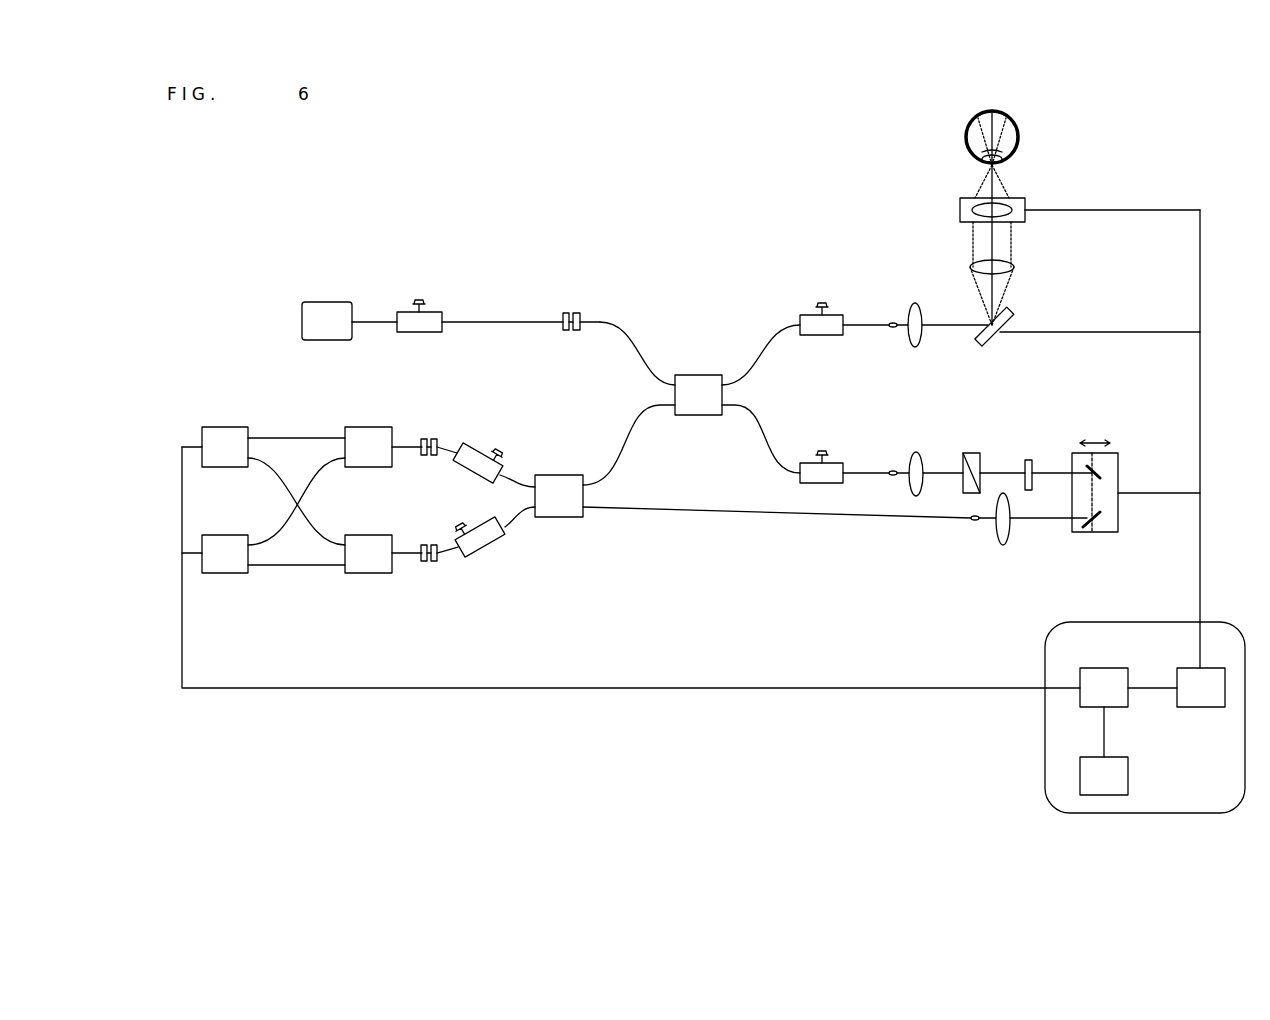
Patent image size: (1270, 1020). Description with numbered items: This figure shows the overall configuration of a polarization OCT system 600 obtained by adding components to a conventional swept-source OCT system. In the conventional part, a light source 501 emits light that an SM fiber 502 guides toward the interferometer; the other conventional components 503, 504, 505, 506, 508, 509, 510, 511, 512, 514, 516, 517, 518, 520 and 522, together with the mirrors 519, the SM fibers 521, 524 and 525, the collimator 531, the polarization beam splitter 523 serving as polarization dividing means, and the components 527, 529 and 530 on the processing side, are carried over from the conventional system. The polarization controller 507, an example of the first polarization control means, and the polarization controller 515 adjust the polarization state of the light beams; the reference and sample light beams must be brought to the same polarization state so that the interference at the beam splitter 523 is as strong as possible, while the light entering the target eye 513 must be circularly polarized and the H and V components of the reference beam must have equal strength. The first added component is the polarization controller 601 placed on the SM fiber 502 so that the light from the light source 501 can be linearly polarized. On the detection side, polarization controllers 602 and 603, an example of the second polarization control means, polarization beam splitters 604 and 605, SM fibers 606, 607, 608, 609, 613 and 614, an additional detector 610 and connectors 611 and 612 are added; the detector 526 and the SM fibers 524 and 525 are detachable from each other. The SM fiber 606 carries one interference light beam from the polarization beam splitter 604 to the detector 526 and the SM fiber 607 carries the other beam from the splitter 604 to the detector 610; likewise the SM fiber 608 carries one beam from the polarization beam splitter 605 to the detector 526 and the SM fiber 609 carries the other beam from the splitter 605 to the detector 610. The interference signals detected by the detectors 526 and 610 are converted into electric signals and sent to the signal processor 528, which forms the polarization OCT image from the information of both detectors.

The OCT apparatus 600 is at (286, 194).
The light source 501 is at (334, 302).
The SM fiber 502 is at (377, 320).
The polarization controller 601 is at (432, 312).
The conventional SS-OCT component 503 is at (572, 312).
The conventional SS-OCT component 504 is at (640, 345).
The conventional SS-OCT component 505 is at (698, 375).
The conventional SS-OCT component 506 is at (768, 336).
The polarization controller 507 is at (805, 315).
The conventional SS-OCT component 508 is at (912, 303).
The conventional SS-OCT component 509 is at (1008, 316).
The conventional SS-OCT component 510 is at (1014, 266).
The conventional SS-OCT component 511 is at (962, 208).
The conventional SS-OCT component 512 is at (1022, 198).
The target eye 513 is at (1016, 128).
The conventional SS-OCT component 514 is at (756, 444).
The polarization controller 515 is at (820, 463).
The conventional SS-OCT component 516 is at (918, 452).
The conventional SS-OCT component 517 is at (970, 453).
The conventional SS-OCT component 518 is at (1028, 460).
The mirror 519 is at (1086, 462).
The conventional SS-OCT component 520 is at (1118, 466).
The SM fiber 521 is at (800, 514).
The optical fiber 522 is at (636, 440).
The polarization beam splitter 523 is at (560, 517).
The SM fiber 524 is at (520, 476).
The SM fiber 525 is at (520, 516).
The detector 526 is at (224, 427).
The conventional SS-OCT component 527 is at (1045, 764).
The signal processor 528 is at (1105, 668).
The conventional SS-OCT component 529 is at (1178, 668).
The conventional SS-OCT component 530 is at (1128, 776).
The collimator 531 is at (1003, 546).
The polarization controller 602 is at (476, 446).
The polarization controller 603 is at (470, 552).
The polarization beam splitter 604 is at (368, 427).
The polarization beam splitter 605 is at (368, 573).
The SM fiber 606 is at (292, 438).
The SM fiber 607 is at (332, 462).
The SM fiber 608 is at (258, 462).
The SM fiber 609 is at (296, 565).
The detector 610 is at (226, 573).
The connector 611 is at (434, 440).
The connector 612 is at (436, 562).
The SM fiber 613 is at (408, 445).
The SM fiber 614 is at (408, 560).